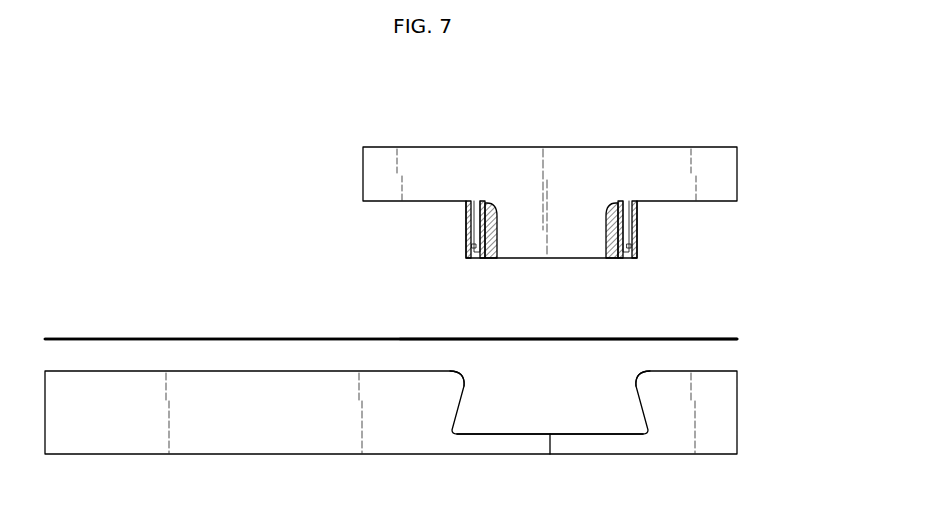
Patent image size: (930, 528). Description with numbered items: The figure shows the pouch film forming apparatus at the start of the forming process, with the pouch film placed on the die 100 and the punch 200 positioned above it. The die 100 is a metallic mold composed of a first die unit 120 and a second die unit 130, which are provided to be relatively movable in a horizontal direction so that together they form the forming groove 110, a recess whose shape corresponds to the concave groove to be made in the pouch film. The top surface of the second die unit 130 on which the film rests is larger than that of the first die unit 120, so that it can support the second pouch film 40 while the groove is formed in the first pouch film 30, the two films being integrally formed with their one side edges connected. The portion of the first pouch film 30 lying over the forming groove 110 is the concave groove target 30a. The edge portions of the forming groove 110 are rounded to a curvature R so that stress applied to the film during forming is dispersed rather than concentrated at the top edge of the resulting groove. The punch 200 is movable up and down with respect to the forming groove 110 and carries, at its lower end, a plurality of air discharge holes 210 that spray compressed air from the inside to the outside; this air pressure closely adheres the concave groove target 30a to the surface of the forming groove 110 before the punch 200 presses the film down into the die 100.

The punch 200 is at (702, 118).
The air discharge holes 210 is at (487, 258).
The die 100 is at (755, 357).
The second pouch film 40 is at (157, 337).
The first pouch film 30 is at (713, 337).
The concave groove target 30a is at (561, 337).
The second die unit 130 is at (275, 455).
The first die unit 120 is at (714, 455).
The forming groove 110 is at (604, 418).
The curvature R is at (466, 379).